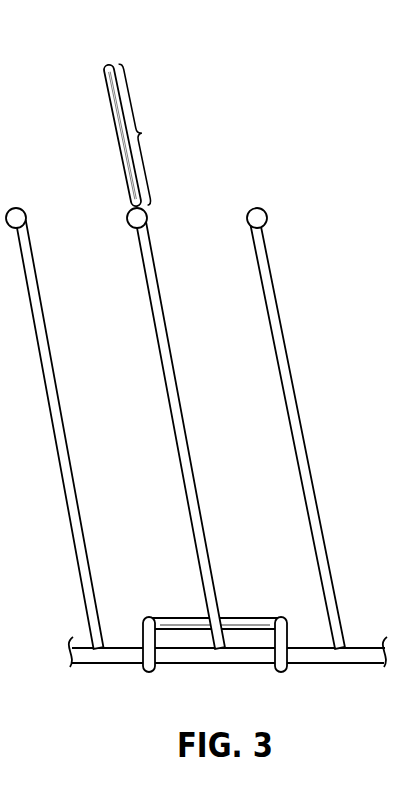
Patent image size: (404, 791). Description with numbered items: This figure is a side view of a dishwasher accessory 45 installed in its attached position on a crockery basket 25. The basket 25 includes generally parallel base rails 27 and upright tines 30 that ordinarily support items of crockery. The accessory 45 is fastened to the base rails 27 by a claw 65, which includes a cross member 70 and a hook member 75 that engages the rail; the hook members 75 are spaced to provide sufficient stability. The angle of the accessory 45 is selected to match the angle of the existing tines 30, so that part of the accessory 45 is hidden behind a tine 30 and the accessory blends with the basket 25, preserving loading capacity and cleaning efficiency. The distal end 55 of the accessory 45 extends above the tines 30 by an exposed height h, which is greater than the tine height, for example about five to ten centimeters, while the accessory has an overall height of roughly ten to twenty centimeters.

The crockery basket 25 is at (197, 387).
The base rails 27 is at (367, 663).
The upright tines 30 is at (63, 479).
The accessory 45 is at (92, 151).
The distal end 55 is at (102, 63).
The claw 65 is at (245, 608).
The cross member 70 is at (260, 619).
The hook member 75 is at (287, 637).